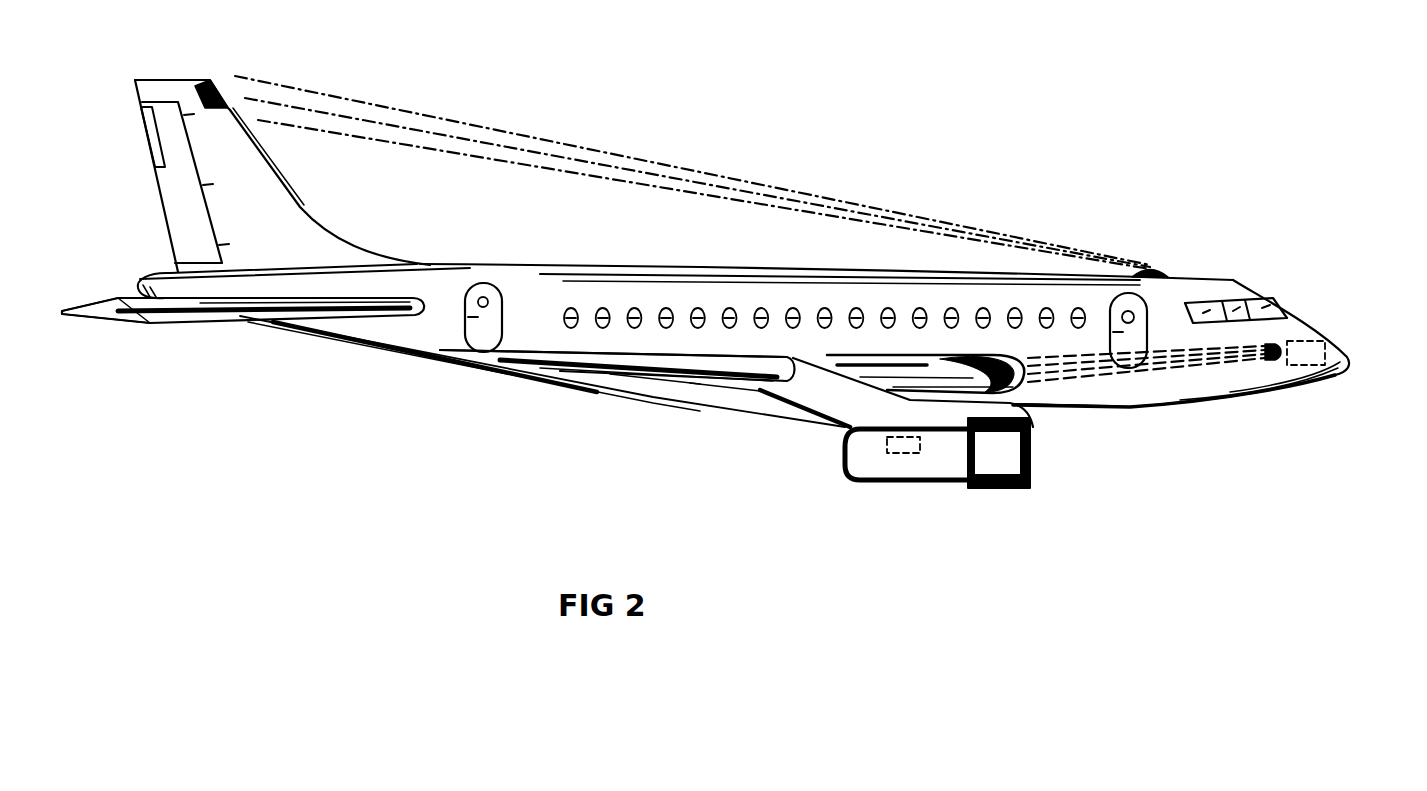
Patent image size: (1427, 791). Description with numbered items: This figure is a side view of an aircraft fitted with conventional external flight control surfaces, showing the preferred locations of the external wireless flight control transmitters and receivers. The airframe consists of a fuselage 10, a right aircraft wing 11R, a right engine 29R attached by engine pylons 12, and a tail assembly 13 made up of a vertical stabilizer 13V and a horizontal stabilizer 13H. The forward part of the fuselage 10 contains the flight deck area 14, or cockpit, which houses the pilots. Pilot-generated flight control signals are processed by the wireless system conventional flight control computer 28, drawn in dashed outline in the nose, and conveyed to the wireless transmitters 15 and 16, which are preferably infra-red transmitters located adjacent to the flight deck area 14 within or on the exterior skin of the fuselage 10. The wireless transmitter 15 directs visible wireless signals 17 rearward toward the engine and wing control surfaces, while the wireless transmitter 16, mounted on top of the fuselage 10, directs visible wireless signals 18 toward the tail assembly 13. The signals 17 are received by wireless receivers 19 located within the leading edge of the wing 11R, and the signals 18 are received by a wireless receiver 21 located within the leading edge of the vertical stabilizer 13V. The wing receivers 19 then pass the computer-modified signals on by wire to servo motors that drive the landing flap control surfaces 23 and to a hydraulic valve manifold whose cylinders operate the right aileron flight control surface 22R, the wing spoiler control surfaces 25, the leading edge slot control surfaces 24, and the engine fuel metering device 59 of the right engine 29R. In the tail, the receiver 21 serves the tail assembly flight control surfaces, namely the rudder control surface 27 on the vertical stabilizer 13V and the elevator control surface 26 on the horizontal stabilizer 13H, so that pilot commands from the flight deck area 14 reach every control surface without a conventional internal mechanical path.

The fuselage 10 is at (822, 300).
The right aircraft wing 11R is at (622, 370).
The engine pylons 12 is at (810, 392).
The tail assembly 13 is at (167, 292).
The vertical stabilizer of tail assembly 13V is at (288, 218).
The horizontal stabilizer of tail assembly 13H is at (237, 318).
The flight deck area 14 is at (1277, 310).
The wireless transmitters to wings and engines 15 is at (1272, 362).
The wireless transmitter to tail assembly 16 is at (1152, 265).
The visible wireless signals to engine and wing control surfaces 17 is at (1082, 367).
The visible wireless signals to tail assembly control surfaces 18 is at (616, 166).
The wireless receivers for wing flight control surfaces 19 is at (1055, 406).
The wireless receivers for tail assembly flight control surfaces 21 is at (208, 80).
The right aileron flight control surface 22R is at (522, 362).
The landing flap control surfaces 23 is at (698, 384).
The leading edge slot control surfaces 24 is at (672, 380).
The wing spoiler control surfaces 25 is at (916, 355).
The elevator control surface 26 is at (112, 306).
The rudder control surface 27 is at (172, 185).
The wireless system conventional flight control computer 28 is at (1307, 355).
The right engine 29R is at (938, 452).
The engine fuel metering device 59 is at (903, 448).